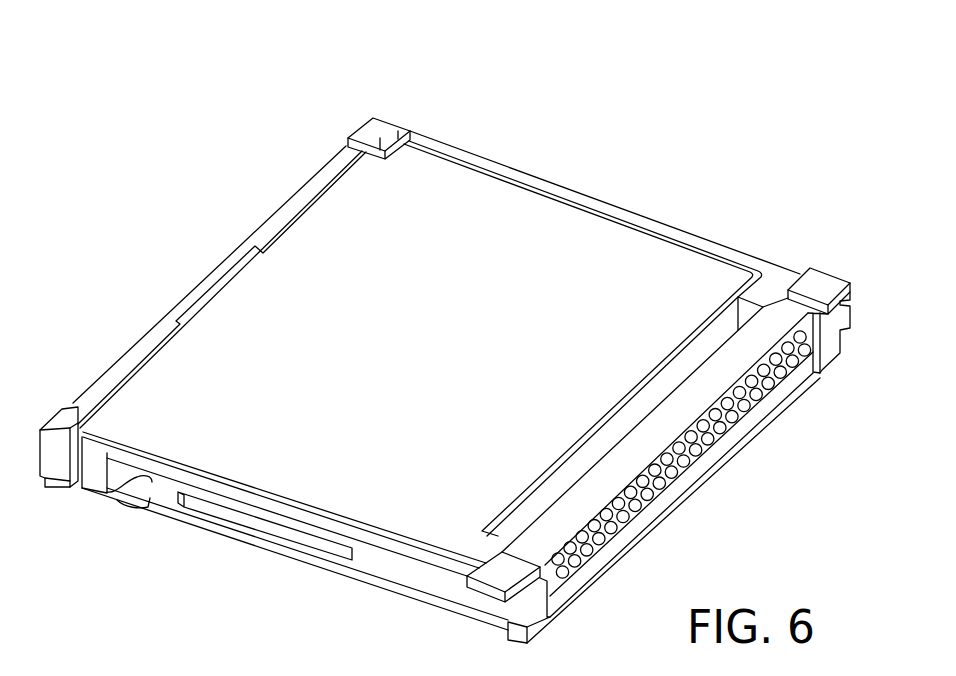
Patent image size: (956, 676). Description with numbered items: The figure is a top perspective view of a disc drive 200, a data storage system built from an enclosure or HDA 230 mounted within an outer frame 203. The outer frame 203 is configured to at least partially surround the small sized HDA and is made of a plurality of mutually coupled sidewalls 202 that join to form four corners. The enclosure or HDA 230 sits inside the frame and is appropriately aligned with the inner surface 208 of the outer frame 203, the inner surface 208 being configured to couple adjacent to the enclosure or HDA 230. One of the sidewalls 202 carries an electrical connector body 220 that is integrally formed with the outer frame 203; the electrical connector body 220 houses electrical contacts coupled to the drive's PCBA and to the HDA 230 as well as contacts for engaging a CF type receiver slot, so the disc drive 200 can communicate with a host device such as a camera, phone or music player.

The disc drive 200 is at (647, 90).
The sidewalls 202 is at (667, 221).
The outer frame 203 is at (483, 160).
The inner surface 208 is at (330, 180).
The electrical connector body 220 is at (704, 458).
The enclosure or HDA 230 is at (510, 216).